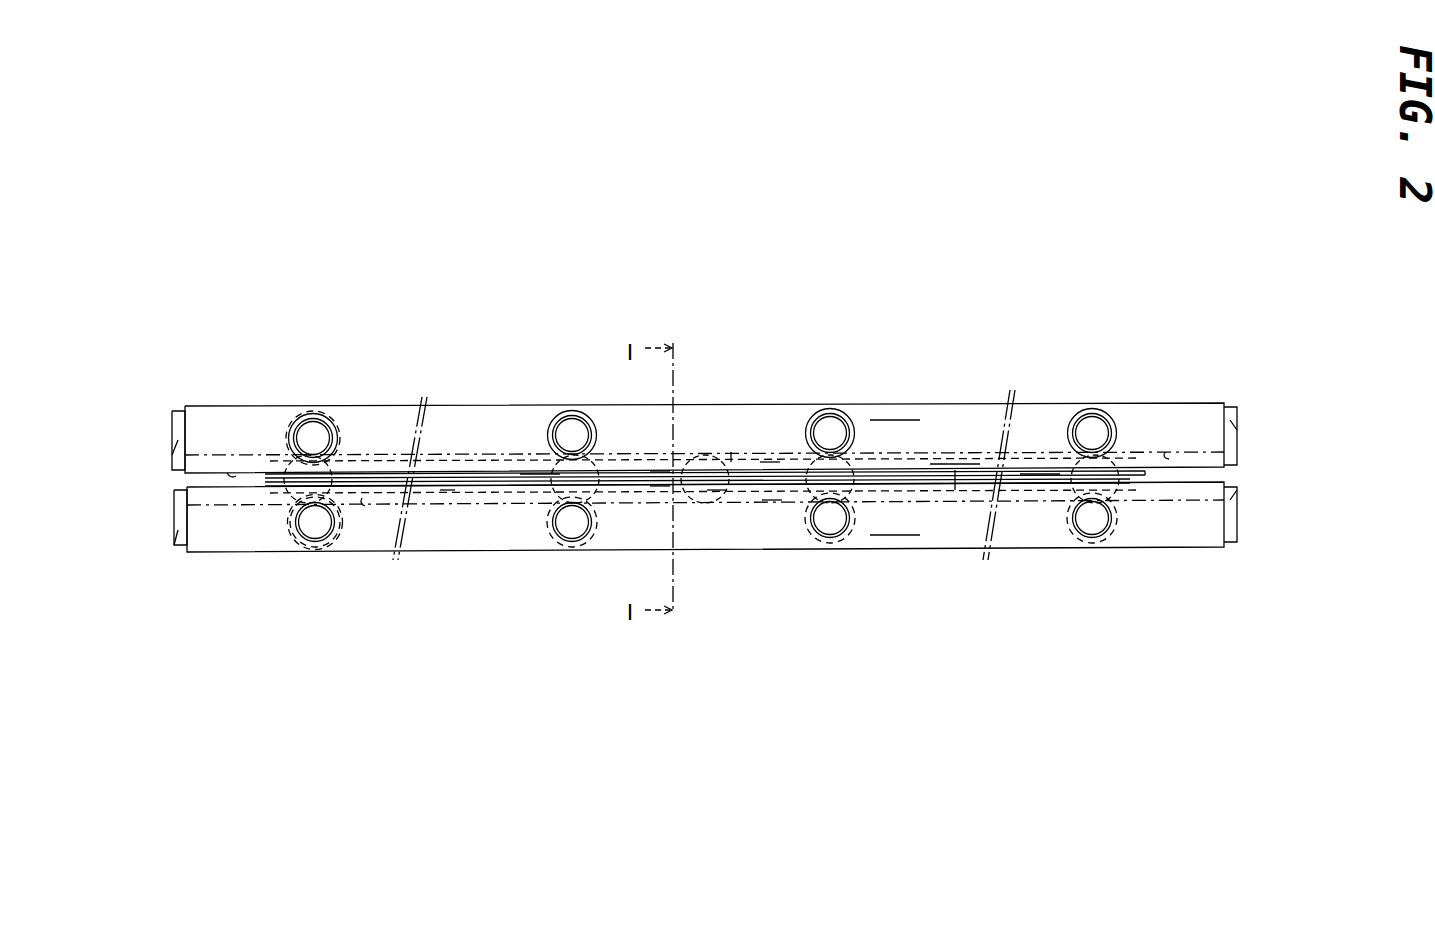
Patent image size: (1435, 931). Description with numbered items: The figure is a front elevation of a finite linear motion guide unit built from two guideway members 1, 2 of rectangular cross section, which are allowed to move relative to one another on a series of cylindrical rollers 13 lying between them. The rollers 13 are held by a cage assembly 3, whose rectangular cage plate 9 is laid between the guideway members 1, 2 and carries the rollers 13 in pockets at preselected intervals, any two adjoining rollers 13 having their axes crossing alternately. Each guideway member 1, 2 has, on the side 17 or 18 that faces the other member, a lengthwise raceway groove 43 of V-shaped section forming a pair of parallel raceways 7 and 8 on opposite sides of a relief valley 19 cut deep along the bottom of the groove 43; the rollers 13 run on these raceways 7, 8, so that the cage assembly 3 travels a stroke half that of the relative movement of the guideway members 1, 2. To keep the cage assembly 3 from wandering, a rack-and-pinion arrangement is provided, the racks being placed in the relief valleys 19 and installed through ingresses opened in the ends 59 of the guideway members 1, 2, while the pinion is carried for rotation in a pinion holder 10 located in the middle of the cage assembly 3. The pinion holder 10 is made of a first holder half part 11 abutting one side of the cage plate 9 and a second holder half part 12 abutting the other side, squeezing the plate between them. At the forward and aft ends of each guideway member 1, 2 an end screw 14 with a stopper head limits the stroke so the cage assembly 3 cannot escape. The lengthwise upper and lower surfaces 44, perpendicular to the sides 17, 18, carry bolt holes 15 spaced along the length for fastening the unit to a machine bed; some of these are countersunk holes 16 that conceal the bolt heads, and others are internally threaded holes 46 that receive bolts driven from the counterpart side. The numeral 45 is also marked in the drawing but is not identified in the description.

The guideway member 1 is at (704, 404).
The guideway member 2 is at (705, 554).
The cage assembly 3 is at (540, 475).
The raceway 7 is at (777, 396).
The raceway 8 is at (773, 562).
The cage plate 9 is at (1053, 402).
The pinion holder 10 is at (717, 490).
The first holder half part 11 is at (660, 477).
The second holder half part 12 is at (660, 478).
The roller 13 is at (957, 387).
The end screw 14 is at (172, 512).
The bolt hole 15 is at (687, 475).
The countersunk hole 16 is at (326, 390).
The side 17 is at (225, 407).
The side 18 is at (1180, 482).
The relief valley 19 is at (778, 489).
The raceway groove 43 is at (848, 480).
The upper and lower surface 44 is at (896, 485).
The guide rail 45 is at (447, 490).
The threaded hole 46 is at (319, 558).
The end 59 is at (178, 537).